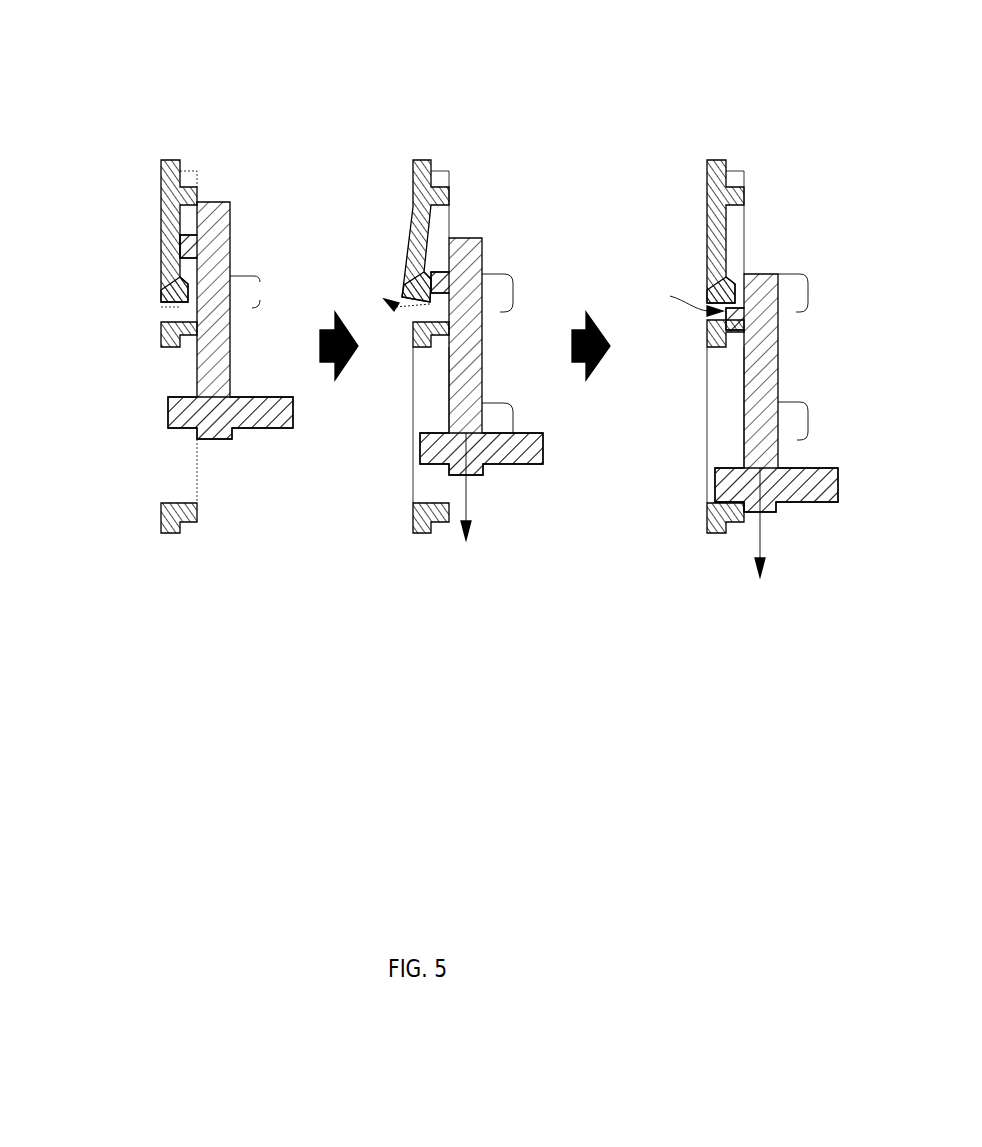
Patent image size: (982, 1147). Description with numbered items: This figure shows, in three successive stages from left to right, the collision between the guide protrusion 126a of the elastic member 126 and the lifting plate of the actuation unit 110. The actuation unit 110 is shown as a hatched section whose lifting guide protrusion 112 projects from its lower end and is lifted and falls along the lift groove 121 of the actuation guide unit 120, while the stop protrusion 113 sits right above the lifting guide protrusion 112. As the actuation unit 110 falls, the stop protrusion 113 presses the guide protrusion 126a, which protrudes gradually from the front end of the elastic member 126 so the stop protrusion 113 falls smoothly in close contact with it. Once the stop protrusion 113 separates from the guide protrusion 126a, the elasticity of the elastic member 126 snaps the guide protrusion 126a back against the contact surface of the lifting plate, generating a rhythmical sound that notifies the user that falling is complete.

The actuation unit 110 is at (232, 212).
The lifting guide protrusion 112 is at (167, 413).
The stop protrusion 113 is at (161, 245).
The actuation guide unit 120 is at (170, 160).
The lift groove 121 is at (173, 472).
The elastic member 126 is at (161, 281).
The guide protrusion 126a is at (232, 275).